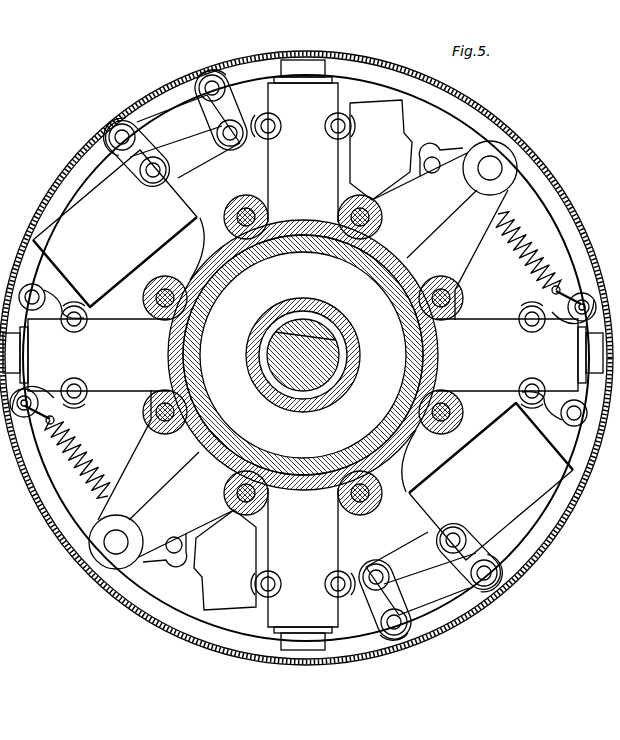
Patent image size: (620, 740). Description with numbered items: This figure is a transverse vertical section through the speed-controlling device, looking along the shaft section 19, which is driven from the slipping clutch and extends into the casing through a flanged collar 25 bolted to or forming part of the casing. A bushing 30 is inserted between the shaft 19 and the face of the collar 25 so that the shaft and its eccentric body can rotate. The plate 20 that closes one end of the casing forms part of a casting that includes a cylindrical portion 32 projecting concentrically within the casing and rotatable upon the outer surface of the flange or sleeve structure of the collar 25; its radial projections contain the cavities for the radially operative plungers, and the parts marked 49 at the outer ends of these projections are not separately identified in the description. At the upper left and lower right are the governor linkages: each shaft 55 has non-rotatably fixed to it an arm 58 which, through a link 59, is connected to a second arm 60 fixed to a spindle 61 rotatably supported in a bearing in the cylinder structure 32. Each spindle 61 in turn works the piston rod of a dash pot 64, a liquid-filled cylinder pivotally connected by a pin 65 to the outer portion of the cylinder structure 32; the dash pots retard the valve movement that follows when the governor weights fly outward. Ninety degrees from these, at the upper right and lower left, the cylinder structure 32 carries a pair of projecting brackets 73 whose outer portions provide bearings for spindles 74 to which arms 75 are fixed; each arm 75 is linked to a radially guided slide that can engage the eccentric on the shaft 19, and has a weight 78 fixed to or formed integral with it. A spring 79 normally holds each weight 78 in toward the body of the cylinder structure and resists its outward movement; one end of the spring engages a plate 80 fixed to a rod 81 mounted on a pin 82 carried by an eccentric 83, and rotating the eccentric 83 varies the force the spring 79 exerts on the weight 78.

The shaft section 19 is at (302, 372).
The plate 20 is at (160, 122).
The flanged collar 25 is at (298, 248).
The bearing shell 30 is at (268, 372).
The cylindrical portion 32 is at (178, 270).
The end cap 49 is at (303, 66).
The shaft 55 is at (108, 130).
The arm 58 is at (138, 166).
The link 59 is at (200, 162).
The second arm 60 is at (231, 105).
The spindle 61 is at (215, 77).
The dash pot 64 is at (303, 355).
The pin 65 is at (40, 292).
The projecting bracket 73 is at (303, 355).
The spindle 74 is at (303, 355).
The arm 75 is at (447, 151).
The weight 78 is at (303, 355).
The spring 79 is at (303, 351).
The plate 80 is at (552, 302).
The rod 81 is at (566, 312).
The pin 82 is at (578, 325).
The eccentric 83 is at (582, 293).